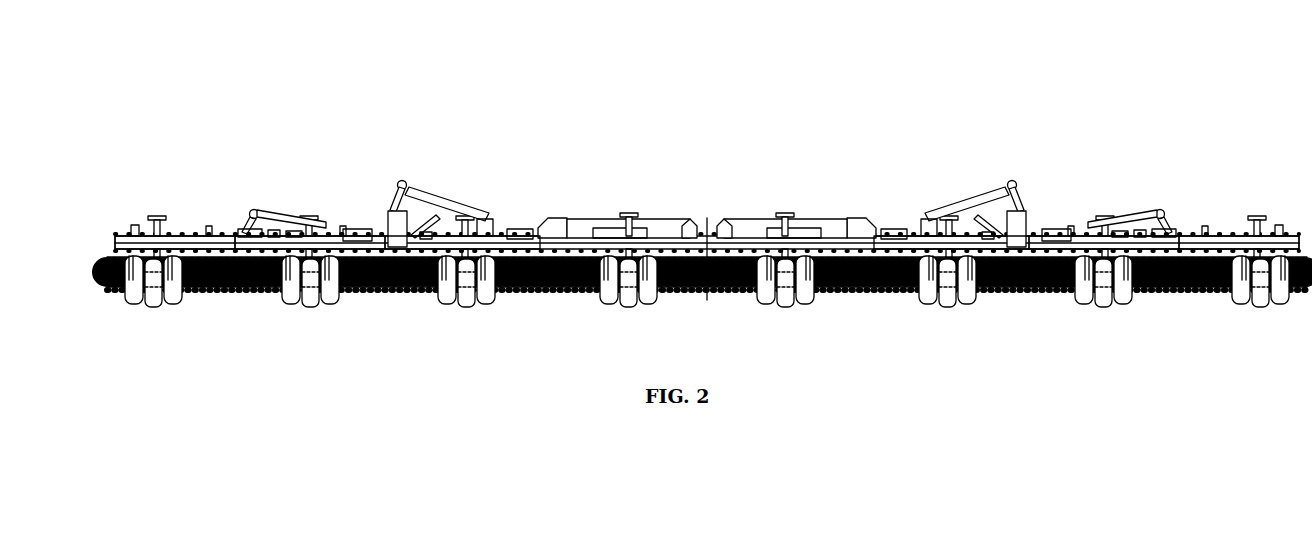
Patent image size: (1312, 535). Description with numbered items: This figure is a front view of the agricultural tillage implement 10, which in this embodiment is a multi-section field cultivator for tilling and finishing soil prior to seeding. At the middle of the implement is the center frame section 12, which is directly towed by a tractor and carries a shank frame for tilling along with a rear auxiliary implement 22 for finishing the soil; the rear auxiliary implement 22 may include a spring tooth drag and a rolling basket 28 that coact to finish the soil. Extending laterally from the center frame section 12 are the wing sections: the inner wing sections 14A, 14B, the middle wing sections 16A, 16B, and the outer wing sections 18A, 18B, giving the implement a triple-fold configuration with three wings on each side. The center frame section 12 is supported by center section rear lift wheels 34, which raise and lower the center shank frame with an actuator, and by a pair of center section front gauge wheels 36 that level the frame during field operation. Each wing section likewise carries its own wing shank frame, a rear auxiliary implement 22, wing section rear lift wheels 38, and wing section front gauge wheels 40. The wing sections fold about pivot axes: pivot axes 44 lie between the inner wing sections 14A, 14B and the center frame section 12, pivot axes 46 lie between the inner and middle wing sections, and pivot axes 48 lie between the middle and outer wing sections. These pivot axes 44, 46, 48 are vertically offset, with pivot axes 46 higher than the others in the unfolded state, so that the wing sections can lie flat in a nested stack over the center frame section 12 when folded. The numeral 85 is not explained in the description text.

The agricultural tillage implement 10 is at (948, 70).
The center frame section 12 is at (781, 198).
The inner wing section 14A is at (947, 175).
The inner wing section 14B is at (488, 175).
The middle wing section 16A is at (1087, 192).
The middle wing section 16B is at (334, 178).
The outer wing section 18A is at (1227, 212).
The outer wing section 18B is at (192, 178).
The rear auxiliary implement 22 is at (205, 290).
The rolling basket 28 is at (512, 288).
The center section rear lift wheels 34 is at (610, 306).
The center section front gauge wheels 36 is at (627, 306).
The wing section rear lift wheels 38 is at (133, 308).
The wing section front gauge wheels 40 is at (150, 307).
The pivot axes 44 is at (578, 230).
The pivot axes 46 is at (414, 182).
The pivot axes 48 is at (250, 210).
The shank standard 85 is at (172, 238).